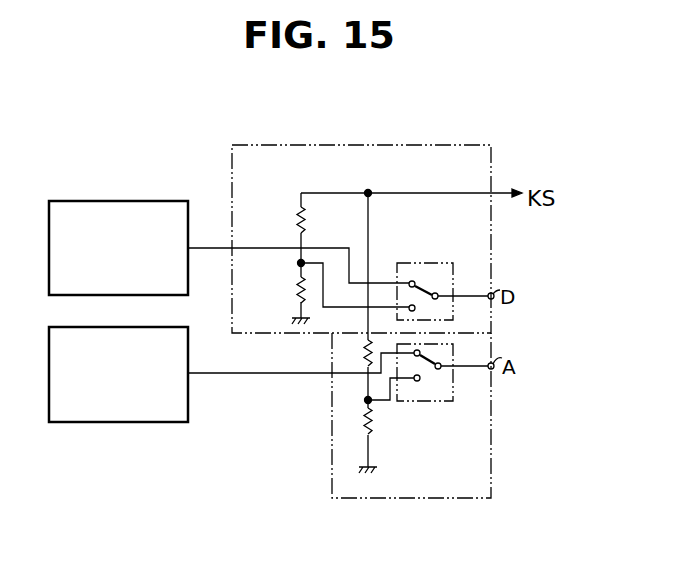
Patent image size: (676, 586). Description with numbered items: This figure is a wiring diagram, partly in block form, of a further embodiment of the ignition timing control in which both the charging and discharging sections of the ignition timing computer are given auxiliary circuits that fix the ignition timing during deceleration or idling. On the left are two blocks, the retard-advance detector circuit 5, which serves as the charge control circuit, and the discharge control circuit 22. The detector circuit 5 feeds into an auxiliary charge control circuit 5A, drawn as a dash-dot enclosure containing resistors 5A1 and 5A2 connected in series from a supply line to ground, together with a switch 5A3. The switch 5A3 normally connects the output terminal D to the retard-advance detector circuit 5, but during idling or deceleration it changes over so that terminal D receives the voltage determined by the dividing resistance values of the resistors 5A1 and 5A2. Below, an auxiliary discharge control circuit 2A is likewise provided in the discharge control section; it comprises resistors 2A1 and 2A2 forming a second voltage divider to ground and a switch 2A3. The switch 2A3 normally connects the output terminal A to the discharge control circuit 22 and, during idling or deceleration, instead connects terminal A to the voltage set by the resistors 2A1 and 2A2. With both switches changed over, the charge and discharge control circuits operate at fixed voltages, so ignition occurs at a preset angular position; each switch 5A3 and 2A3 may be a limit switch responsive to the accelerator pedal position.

The retard-advance detector circuit 5 is at (154, 201).
The discharge control circuit 22 is at (130, 422).
The auxiliary charge control circuit 5A is at (366, 145).
The resistor 5A1 is at (306, 219).
The resistor 5A2 is at (298, 288).
The switch 5A3 is at (402, 263).
The auxiliary discharge control circuit 2A is at (415, 498).
The resistor 2A1 is at (363, 355).
The resistor 2A2 is at (371, 428).
The switch 2A3 is at (452, 398).